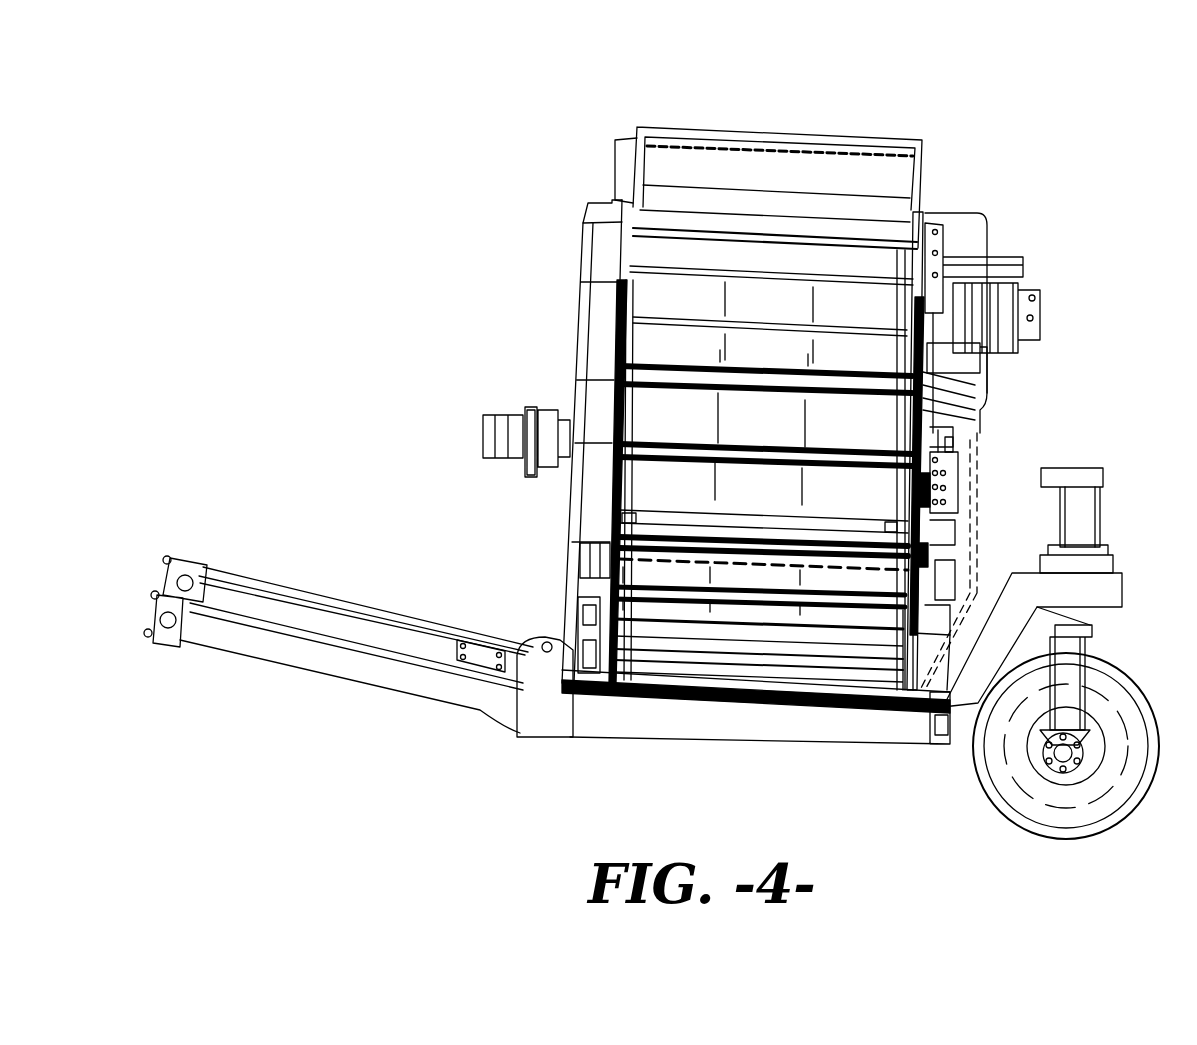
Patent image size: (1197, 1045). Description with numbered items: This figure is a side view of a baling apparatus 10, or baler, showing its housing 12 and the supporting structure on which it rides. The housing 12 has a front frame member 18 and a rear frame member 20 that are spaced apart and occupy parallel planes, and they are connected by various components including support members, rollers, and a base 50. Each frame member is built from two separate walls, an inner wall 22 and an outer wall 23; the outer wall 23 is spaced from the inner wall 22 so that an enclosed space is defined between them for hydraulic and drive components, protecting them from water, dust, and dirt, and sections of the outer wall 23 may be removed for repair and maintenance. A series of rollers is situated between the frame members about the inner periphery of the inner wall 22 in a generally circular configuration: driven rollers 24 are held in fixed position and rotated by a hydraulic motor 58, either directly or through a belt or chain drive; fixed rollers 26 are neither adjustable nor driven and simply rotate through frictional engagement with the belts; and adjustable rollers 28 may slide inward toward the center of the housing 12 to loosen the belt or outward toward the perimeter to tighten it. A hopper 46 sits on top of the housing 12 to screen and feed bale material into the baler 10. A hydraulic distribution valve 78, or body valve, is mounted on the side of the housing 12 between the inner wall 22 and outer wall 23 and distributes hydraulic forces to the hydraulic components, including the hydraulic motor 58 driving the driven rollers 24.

The baling apparatus 10 is at (1024, 106).
The housing 12 is at (583, 246).
The front frame member 18 is at (580, 317).
The rear frame member 20 is at (985, 422).
The inner wall 22 is at (580, 267).
The outer wall 23 is at (580, 355).
The driven roller 24 is at (643, 417).
The fixed roller 26 is at (723, 662).
The adjustable roller 28 is at (705, 290).
The hopper 46 is at (800, 133).
The base 50 is at (792, 722).
The hydraulic motor 58 is at (483, 437).
The hydraulic distribution valve 78 is at (947, 465).